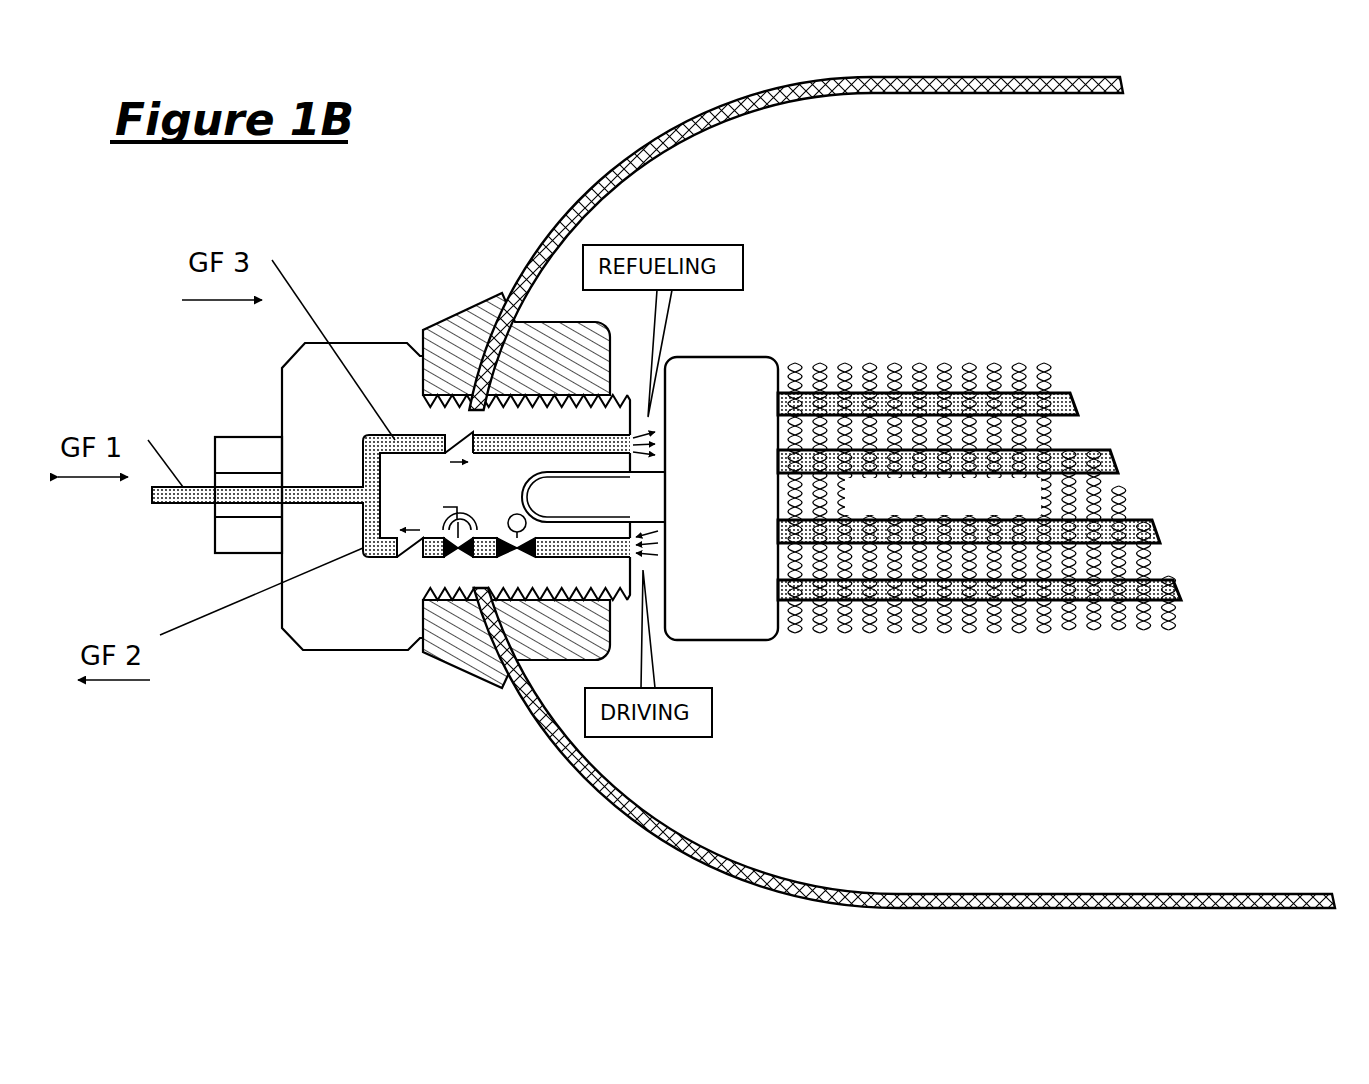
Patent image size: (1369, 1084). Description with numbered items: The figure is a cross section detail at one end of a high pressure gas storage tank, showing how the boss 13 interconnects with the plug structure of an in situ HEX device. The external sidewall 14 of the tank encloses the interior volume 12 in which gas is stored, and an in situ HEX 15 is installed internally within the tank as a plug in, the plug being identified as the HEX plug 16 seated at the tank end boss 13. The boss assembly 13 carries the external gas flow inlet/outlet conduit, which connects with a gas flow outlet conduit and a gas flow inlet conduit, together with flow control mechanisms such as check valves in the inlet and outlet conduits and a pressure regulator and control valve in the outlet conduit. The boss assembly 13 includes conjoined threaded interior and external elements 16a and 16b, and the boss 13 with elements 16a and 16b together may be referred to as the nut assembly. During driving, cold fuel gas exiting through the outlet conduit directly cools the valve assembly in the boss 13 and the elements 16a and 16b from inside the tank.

The interior volume 12 is at (912, 245).
The end boss 13 is at (354, 650).
The external sidewall 14 is at (672, 148).
The in situ HEX 15 is at (905, 624).
The HEX plug 16 is at (746, 642).
The threaded interior element 16a is at (560, 628).
The threaded external element 16b is at (462, 312).